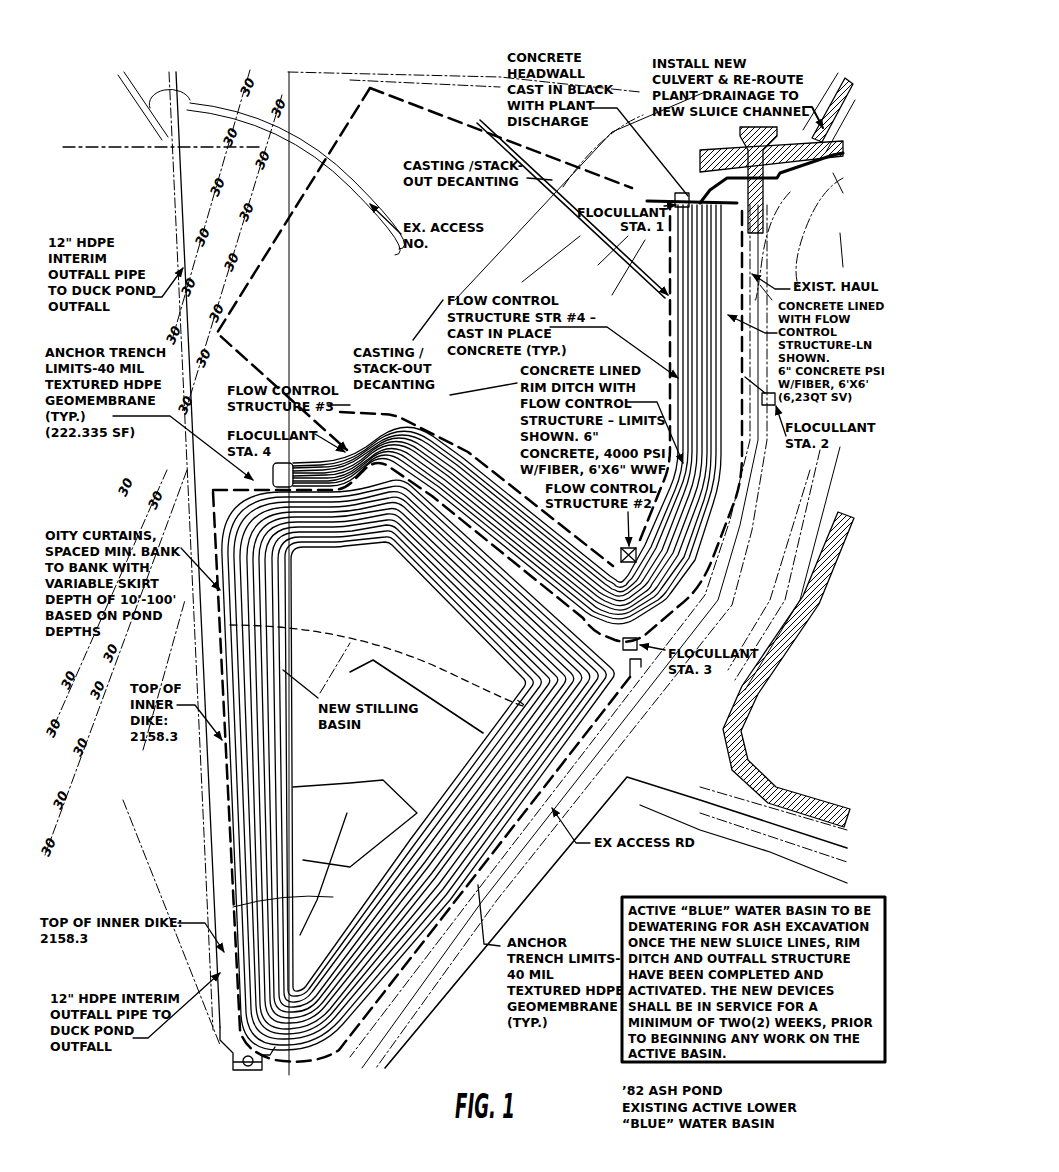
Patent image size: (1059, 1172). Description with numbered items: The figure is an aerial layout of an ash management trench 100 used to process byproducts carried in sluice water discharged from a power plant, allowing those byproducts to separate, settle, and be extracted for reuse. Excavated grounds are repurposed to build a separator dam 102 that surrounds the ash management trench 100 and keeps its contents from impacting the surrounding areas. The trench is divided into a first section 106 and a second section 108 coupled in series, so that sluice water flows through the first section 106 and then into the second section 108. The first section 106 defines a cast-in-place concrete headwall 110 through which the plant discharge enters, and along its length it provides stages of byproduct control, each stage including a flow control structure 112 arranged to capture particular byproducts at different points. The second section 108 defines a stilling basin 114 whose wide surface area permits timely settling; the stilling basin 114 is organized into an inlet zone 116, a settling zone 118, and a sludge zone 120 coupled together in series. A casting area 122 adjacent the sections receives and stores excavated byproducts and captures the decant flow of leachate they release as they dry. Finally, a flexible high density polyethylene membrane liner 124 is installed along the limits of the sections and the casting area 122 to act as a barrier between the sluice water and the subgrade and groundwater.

The ash management trench 100 is at (222, 172).
The separator dam 102 is at (233, 793).
The first section 106 is at (590, 197).
The second section 108 is at (255, 580).
The headwall 110 is at (672, 195).
The flow control structure 112 is at (638, 563).
The stilling basin 114 is at (375, 705).
The inlet zone 116 is at (550, 815).
The settling zone 118 is at (482, 878).
The sludge zone 120 is at (430, 980).
The casting area 122 is at (362, 112).
The flexible high density polyethylene membrane liner 124 is at (326, 175).